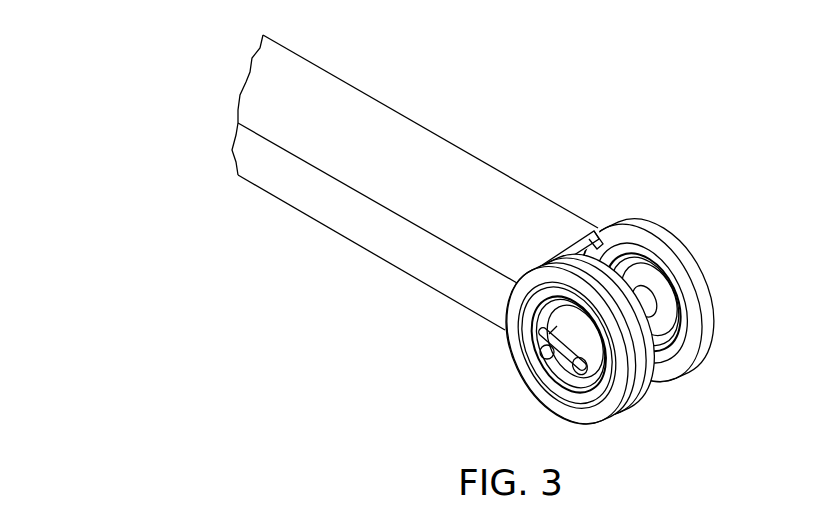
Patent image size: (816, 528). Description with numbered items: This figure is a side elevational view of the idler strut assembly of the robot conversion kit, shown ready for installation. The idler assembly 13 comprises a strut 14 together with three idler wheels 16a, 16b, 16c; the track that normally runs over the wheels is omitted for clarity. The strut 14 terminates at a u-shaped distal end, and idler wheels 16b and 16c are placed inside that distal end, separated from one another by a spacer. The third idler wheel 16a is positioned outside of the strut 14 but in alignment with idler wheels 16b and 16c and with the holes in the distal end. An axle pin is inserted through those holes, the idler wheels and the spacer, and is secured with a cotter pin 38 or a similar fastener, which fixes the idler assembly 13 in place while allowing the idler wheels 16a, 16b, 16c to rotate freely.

The idler assembly 13 is at (409, 340).
The strut 14 is at (483, 178).
The idler wheel 16a is at (597, 424).
The idler wheel 16b is at (650, 386).
The idler wheel 16c is at (716, 323).
The cotter pin 38 is at (556, 374).